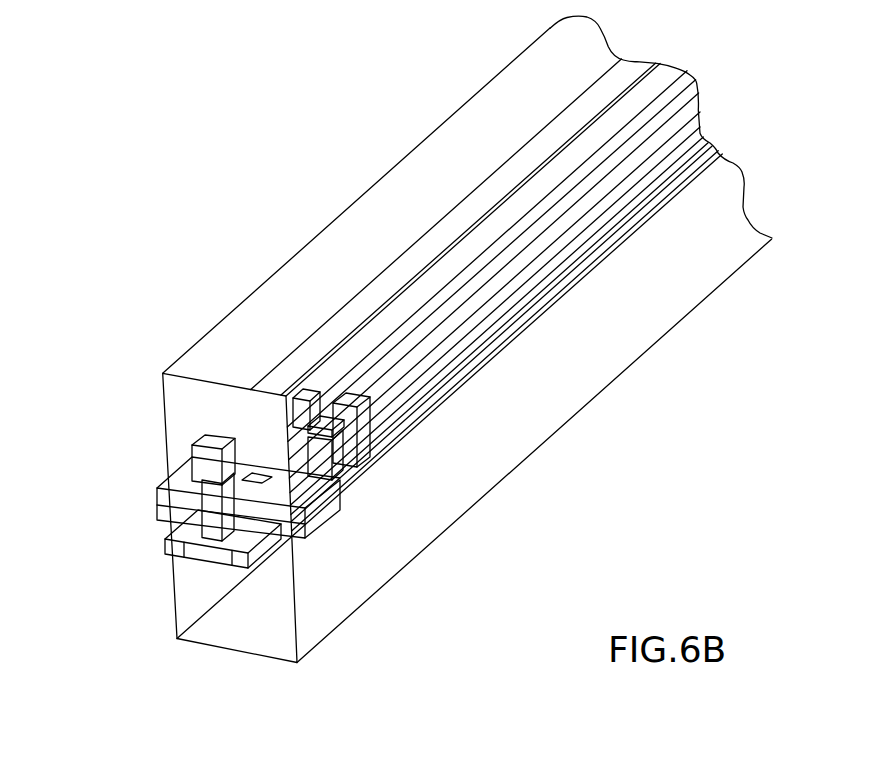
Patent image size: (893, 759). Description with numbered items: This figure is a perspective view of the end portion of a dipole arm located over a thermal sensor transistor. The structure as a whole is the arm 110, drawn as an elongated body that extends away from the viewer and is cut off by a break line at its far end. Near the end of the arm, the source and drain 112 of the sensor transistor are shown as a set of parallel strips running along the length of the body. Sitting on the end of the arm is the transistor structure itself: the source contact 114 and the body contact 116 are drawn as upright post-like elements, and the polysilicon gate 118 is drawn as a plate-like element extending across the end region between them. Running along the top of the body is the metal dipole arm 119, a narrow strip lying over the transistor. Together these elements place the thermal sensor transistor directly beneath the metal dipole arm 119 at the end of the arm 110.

The arm 110 is at (391, 166).
The source and drain 112 is at (450, 363).
The source contact 114 is at (335, 417).
The body contact 116 is at (192, 485).
The polysilicon gate 118 is at (305, 507).
The metal dipole arm 119 is at (345, 322).